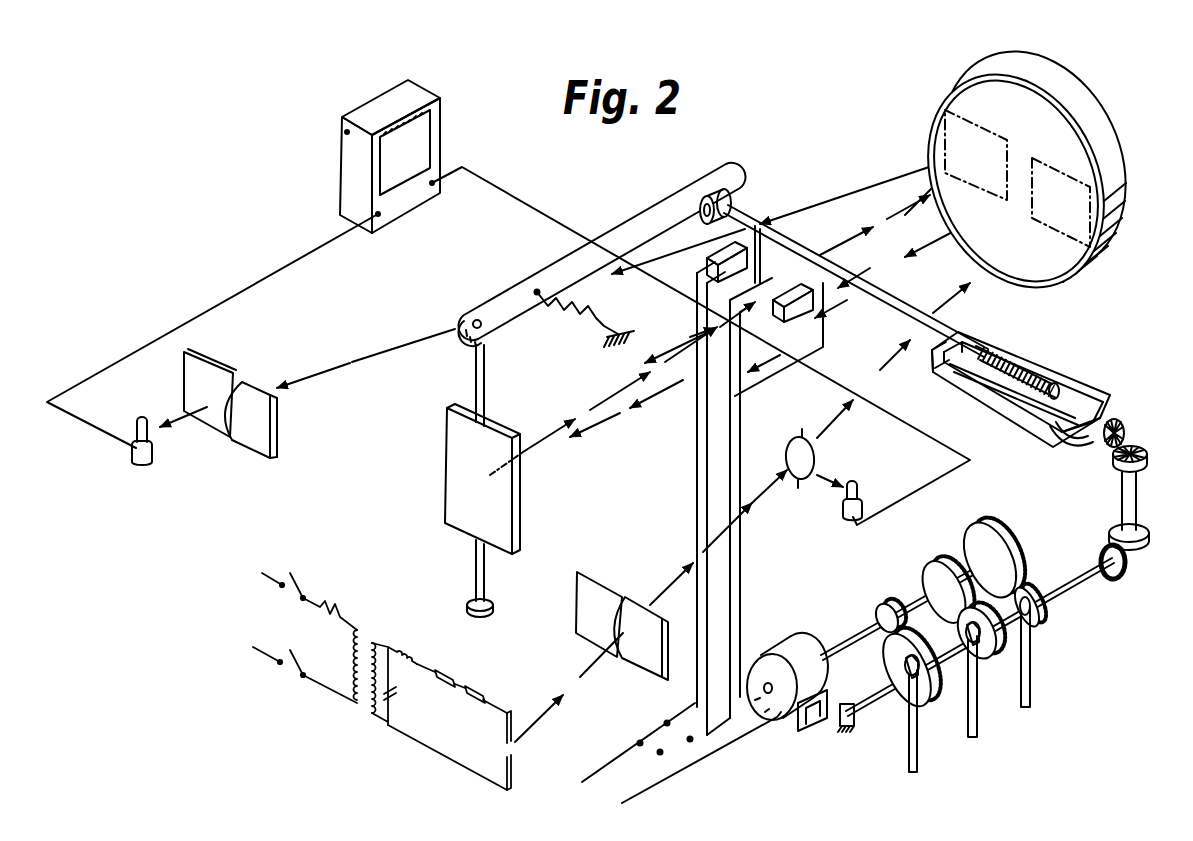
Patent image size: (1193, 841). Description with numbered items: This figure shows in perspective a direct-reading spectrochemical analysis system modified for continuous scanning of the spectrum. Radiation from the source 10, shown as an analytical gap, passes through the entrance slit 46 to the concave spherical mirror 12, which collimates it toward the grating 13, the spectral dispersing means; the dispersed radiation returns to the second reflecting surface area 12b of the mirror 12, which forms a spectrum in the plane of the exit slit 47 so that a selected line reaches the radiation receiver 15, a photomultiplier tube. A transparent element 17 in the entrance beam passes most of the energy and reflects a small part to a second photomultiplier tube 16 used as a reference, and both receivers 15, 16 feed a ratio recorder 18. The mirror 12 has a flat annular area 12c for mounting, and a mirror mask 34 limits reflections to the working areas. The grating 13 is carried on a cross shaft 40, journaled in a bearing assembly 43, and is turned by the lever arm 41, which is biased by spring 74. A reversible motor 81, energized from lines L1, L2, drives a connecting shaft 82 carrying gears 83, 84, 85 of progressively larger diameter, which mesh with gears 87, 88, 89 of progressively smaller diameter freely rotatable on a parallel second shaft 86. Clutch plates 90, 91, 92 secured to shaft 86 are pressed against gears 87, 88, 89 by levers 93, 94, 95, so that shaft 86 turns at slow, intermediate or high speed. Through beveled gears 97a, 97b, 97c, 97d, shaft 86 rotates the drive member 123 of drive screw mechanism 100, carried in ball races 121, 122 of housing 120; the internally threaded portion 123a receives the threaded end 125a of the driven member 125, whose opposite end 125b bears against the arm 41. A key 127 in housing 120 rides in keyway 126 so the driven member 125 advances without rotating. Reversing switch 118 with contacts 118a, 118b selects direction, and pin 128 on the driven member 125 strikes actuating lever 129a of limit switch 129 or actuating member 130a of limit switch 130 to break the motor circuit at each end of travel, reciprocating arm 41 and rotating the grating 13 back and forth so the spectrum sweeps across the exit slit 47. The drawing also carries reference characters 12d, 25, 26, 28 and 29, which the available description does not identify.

The source 10 is at (511, 750).
The concave spherical mirror 12 is at (1018, 168).
The second reflecting surface area 12b is at (953, 138).
The flat annular area 12c is at (1086, 137).
The display window 12d is at (1073, 195).
The spectral dispersing means 13 is at (521, 508).
The radiation receiver 15 is at (136, 421).
The second photomultiplier tube 16 is at (860, 489).
The transparent element 17 is at (786, 452).
The ratio recorder 18 is at (347, 132).
The light beam 25 is at (654, 600).
The light beam 26 is at (663, 395).
The light beam 28 is at (622, 392).
The light beam 29 is at (350, 358).
The mirror mask 34 is at (1098, 262).
The cross shaft 40 is at (475, 386).
The lever arm 41 is at (637, 222).
The bearing assembly 43 is at (469, 600).
The entrance slit 46 is at (620, 650).
The exit slit 47 is at (232, 441).
The spring 74 is at (577, 327).
The reversible motor 81 is at (789, 652).
The connecting shaft 82 is at (843, 640).
The gear 83 is at (887, 604).
The gear 84 is at (935, 565).
The gear 85 is at (986, 526).
The second shaft 86 is at (1082, 584).
The gear 87 is at (903, 678).
The gear 88 is at (967, 646).
The gear 89 is at (1040, 615).
The clutch plate 90 is at (905, 662).
The clutch plate 91 is at (965, 628).
The clutch plate 92 is at (1047, 599).
The lever 93 is at (917, 773).
The lever 94 is at (977, 736).
The lever 95 is at (1031, 696).
The beveled gear 97a is at (1128, 573).
The beveled gear 97b is at (1150, 547).
The beveled gear 97c is at (1148, 452).
The beveled gear 97d is at (1124, 422).
The drive screw mechanism 100 is at (1015, 399).
The reversing switch 118 is at (637, 758).
The contact 118a is at (645, 740).
The contact 118b is at (660, 754).
The housing 120 is at (1070, 373).
The ball race 121 is at (1043, 367).
The ball race 122 is at (1103, 396).
The drive member 123 is at (1075, 440).
The internally threaded portion 123a is at (1000, 415).
The driven member 125 is at (832, 268).
The threaded end 125a is at (957, 387).
The opposite end 125b is at (733, 203).
The keyway 126 is at (902, 320).
The key 127 is at (931, 364).
The pin 128 is at (790, 257).
The limit switch 129 is at (706, 267).
The actuating lever 129a is at (700, 300).
The limit switch 130 is at (814, 303).
The actuating member 130a is at (733, 299).
The line L1 is at (568, 777).
The line L2 is at (677, 777).